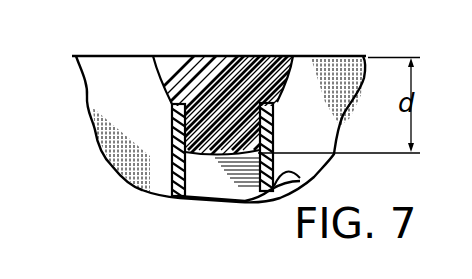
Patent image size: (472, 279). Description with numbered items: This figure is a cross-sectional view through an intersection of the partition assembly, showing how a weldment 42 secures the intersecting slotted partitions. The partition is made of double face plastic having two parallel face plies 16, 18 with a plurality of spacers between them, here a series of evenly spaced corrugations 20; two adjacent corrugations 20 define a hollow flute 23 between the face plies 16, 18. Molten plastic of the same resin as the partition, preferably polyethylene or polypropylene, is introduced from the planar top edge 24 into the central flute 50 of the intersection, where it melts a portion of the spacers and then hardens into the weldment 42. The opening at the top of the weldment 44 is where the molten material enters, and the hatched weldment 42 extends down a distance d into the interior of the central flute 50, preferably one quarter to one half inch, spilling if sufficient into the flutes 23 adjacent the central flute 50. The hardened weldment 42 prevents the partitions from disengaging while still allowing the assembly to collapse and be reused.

The face ply 16 is at (150, 186).
The face ply 18 is at (92, 127).
The corrugation 20 is at (200, 189).
The flute 23 is at (220, 197).
The planar top edge 24 is at (97, 55).
The weldment 42 is at (193, 55).
The groove 44 is at (291, 55).
The central flute 50 is at (240, 203).